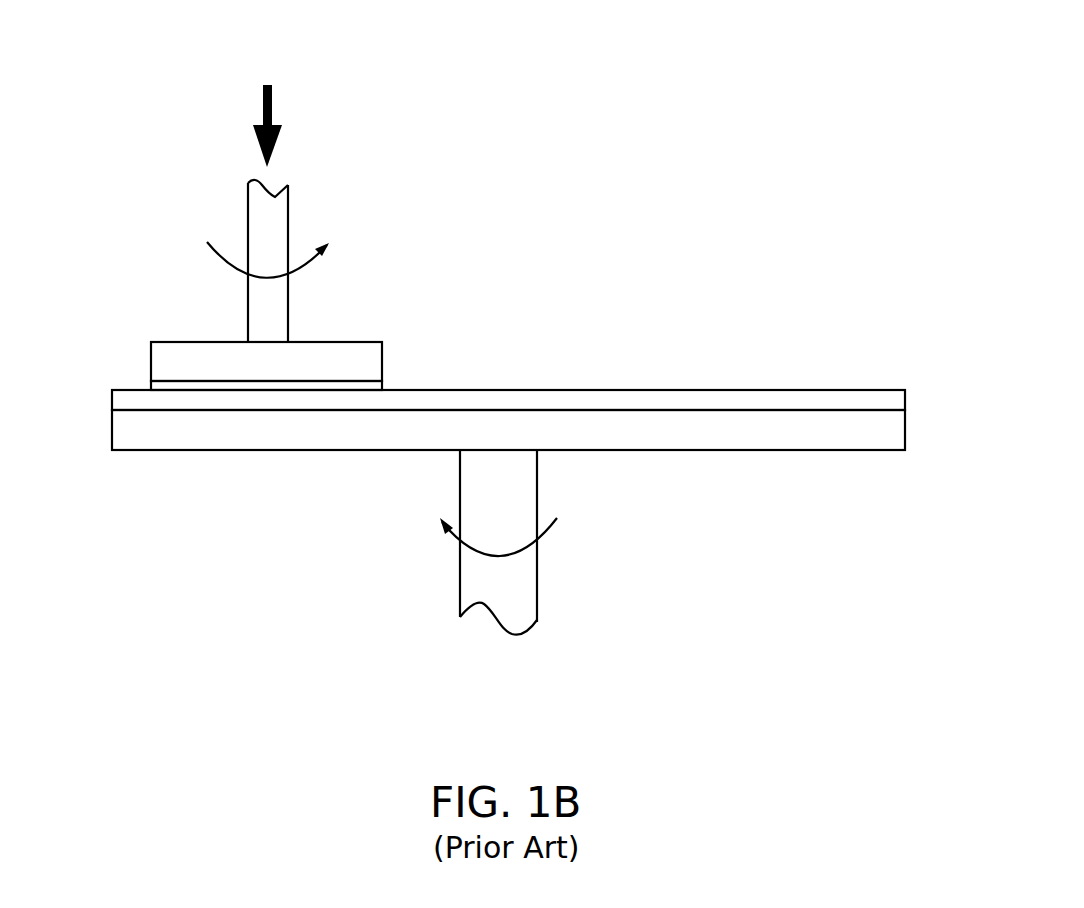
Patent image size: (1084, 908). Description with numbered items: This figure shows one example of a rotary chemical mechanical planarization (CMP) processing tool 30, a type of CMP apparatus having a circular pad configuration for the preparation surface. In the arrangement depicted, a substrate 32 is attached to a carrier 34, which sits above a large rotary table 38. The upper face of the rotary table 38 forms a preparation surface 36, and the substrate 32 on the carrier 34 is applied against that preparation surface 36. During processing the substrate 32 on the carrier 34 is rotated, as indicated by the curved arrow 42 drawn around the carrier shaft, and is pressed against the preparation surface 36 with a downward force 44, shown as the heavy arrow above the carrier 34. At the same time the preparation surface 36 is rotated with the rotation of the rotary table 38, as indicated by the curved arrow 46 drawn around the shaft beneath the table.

The rotary CMP processing tool 30 is at (786, 47).
The substrate 32 is at (378, 387).
The carrier 34 is at (375, 350).
The preparation surface 36 is at (837, 397).
The rotary table 38 is at (890, 443).
The arrow 42 is at (207, 252).
The downward force 44 is at (272, 103).
The arrow 46 is at (557, 518).